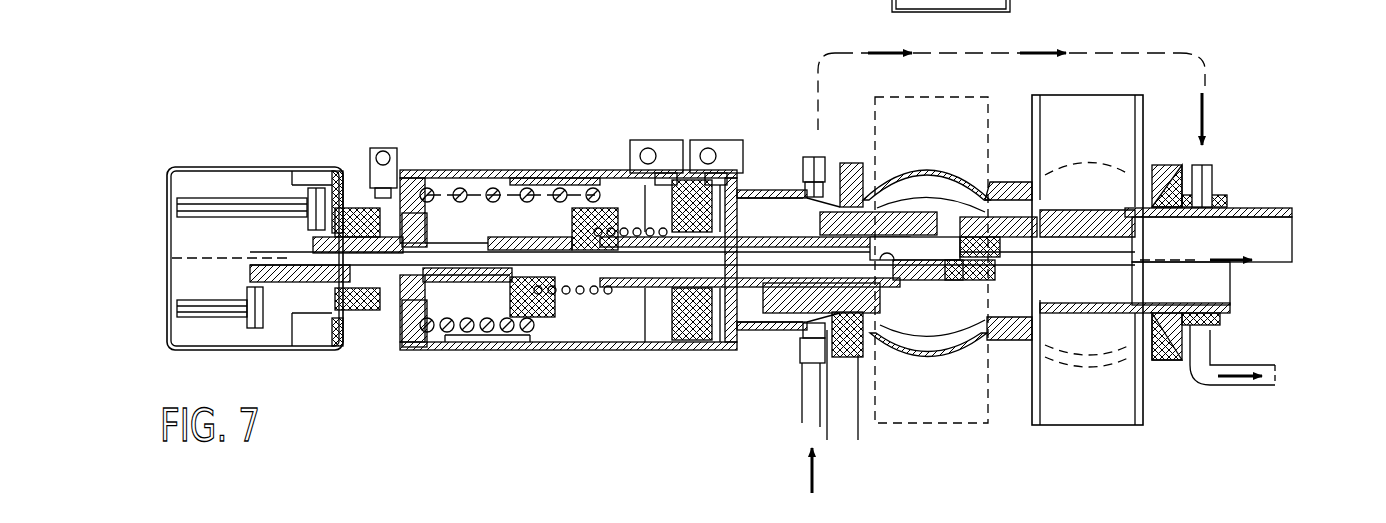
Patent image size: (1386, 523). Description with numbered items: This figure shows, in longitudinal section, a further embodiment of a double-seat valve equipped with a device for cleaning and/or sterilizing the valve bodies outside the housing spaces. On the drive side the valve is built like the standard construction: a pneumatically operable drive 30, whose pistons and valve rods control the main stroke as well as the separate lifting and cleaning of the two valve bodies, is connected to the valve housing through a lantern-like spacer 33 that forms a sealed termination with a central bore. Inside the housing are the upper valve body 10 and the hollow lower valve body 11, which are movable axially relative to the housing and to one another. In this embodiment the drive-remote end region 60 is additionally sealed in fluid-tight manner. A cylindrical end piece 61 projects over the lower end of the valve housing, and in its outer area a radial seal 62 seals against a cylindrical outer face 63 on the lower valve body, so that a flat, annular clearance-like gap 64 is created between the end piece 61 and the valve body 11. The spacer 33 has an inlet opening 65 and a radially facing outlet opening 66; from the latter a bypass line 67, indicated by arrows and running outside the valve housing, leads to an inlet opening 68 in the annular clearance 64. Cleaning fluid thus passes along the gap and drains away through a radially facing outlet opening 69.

The upper valve body 10 is at (982, 222).
The lower valve body 11 is at (1032, 218).
The pneumatically operable drive 30 is at (516, 140).
The lantern-like spacer 33 is at (748, 196).
The drive-remote end region 60 is at (1246, 160).
The cylindrical end piece 61 is at (1220, 326).
The radial seal 62 is at (1221, 205).
The cylindrical outer face 63 is at (1286, 207).
The annular clearance gap 64 is at (1188, 330).
The inlet opening 65 is at (795, 338).
The outlet opening 66 is at (802, 186).
The bypass line 67 is at (1125, 52).
The inlet opening 68 is at (1219, 196).
The outlet opening 69 is at (1228, 330).